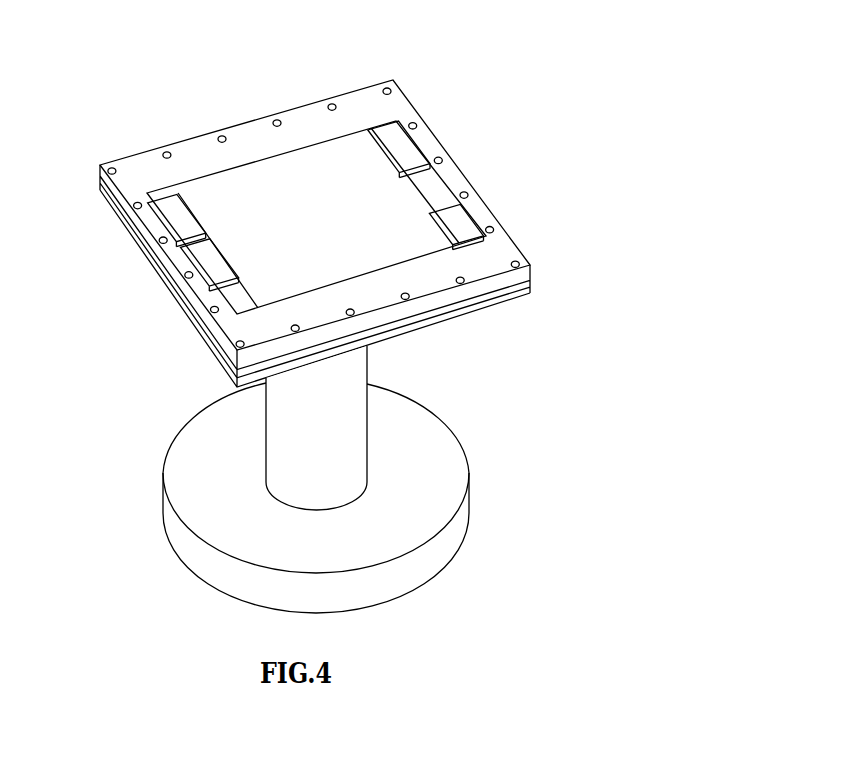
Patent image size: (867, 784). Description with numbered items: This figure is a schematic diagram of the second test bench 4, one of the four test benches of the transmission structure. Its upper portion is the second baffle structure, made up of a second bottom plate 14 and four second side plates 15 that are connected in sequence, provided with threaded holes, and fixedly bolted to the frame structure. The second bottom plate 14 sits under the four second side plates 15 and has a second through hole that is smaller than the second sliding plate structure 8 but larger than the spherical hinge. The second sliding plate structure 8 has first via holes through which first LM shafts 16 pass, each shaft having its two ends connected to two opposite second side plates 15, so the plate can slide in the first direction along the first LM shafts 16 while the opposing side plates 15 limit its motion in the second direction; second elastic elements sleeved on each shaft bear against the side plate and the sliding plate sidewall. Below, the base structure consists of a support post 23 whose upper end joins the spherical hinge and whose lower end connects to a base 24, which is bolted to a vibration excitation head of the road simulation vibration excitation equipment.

The second test bench 4 is at (85, 41).
The second sliding plate structure 8 is at (307, 185).
The second bottom plate 14 is at (172, 222).
The second side plates 15 is at (223, 152).
The first LM shafts 16 is at (420, 190).
The support post 23 is at (310, 448).
The base 24 is at (207, 503).